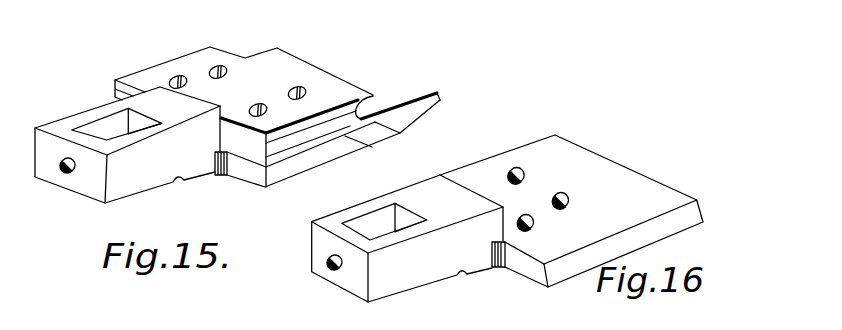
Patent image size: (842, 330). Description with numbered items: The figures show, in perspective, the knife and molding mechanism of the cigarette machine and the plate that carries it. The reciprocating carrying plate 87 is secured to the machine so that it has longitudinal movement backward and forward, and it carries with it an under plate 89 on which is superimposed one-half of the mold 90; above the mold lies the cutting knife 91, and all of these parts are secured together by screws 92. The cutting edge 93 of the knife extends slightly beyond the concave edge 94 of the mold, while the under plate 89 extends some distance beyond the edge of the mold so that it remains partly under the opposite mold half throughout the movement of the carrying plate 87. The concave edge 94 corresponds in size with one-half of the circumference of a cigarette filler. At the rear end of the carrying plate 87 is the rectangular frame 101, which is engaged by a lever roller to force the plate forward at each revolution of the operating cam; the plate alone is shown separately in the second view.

In FIG. 15, the carrying plate 87 is at (297, 164).
In FIG. 16, the carrying plate 87 is at (571, 211).
In FIG. 15, the under plate 89 is at (430, 90).
In FIG. 15, the mold 90 is at (337, 123).
In FIG. 15, the cutting knife 91 is at (323, 88).
In FIG. 15, the screws 92 is at (287, 90).
In FIG. 15, the cutting edge 93 is at (367, 96).
In FIG. 15, the concave edge 94 is at (385, 124).
In FIG. 15, the rectangular frame 101 is at (131, 145).
In FIG. 16, the rectangular frame 101 is at (408, 238).